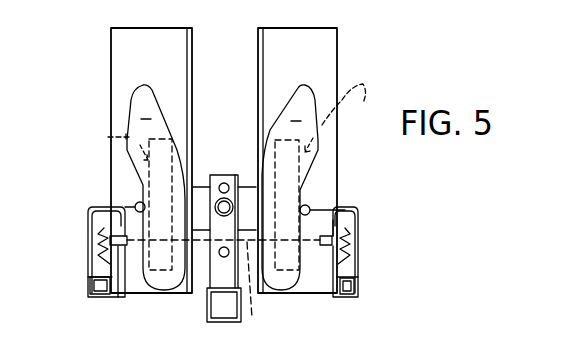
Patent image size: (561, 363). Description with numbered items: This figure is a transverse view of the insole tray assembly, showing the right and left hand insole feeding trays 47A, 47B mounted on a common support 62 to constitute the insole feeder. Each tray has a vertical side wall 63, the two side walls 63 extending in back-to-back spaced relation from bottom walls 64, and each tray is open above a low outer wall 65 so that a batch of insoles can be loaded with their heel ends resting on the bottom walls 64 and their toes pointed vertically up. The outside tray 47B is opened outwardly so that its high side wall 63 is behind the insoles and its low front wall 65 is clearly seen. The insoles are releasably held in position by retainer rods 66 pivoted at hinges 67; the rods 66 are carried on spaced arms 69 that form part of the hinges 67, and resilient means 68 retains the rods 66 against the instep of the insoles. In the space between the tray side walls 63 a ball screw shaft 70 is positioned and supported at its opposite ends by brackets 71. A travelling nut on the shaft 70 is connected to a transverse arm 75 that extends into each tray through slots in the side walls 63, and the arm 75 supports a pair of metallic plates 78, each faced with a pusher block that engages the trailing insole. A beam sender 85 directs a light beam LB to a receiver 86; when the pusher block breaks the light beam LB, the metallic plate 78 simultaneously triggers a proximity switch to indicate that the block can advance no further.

The insole feeding tray 47A is at (120, 60).
The outside tray 47B is at (330, 50).
The vertical side wall 63 is at (258, 50).
The transverse arm 75 is at (203, 178).
The ball screw shaft 70 is at (231, 200).
The support 62 is at (208, 323).
The bracket 71 is at (213, 280).
The bottom wall 64 is at (130, 298).
The low outer wall 65 is at (86, 218).
The hinge 67 is at (88, 280).
The resilient means 68 is at (100, 241).
The beam sender 85 is at (134, 206).
The receiver 86 is at (342, 208).
The retainer rod 66 is at (137, 204).
The spaced arm 69 is at (358, 222).
The metallic plate 78 is at (223, 112).
The light beam LB is at (254, 292).